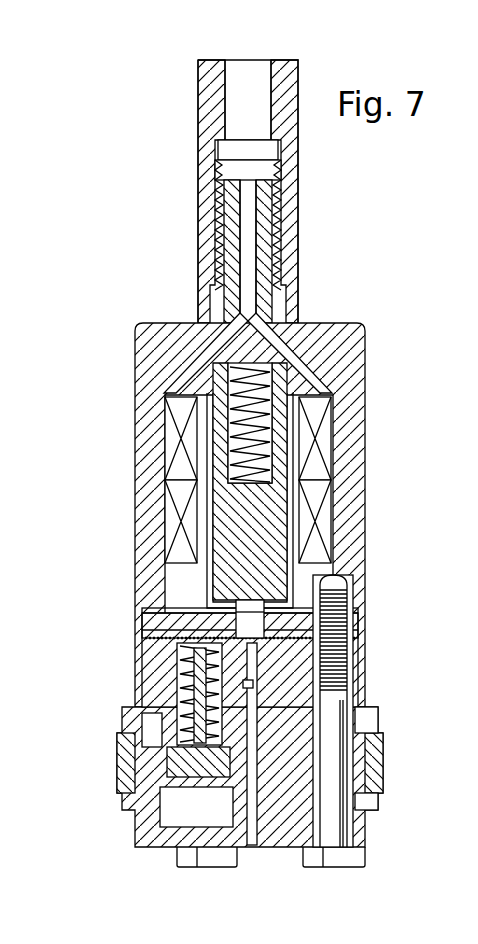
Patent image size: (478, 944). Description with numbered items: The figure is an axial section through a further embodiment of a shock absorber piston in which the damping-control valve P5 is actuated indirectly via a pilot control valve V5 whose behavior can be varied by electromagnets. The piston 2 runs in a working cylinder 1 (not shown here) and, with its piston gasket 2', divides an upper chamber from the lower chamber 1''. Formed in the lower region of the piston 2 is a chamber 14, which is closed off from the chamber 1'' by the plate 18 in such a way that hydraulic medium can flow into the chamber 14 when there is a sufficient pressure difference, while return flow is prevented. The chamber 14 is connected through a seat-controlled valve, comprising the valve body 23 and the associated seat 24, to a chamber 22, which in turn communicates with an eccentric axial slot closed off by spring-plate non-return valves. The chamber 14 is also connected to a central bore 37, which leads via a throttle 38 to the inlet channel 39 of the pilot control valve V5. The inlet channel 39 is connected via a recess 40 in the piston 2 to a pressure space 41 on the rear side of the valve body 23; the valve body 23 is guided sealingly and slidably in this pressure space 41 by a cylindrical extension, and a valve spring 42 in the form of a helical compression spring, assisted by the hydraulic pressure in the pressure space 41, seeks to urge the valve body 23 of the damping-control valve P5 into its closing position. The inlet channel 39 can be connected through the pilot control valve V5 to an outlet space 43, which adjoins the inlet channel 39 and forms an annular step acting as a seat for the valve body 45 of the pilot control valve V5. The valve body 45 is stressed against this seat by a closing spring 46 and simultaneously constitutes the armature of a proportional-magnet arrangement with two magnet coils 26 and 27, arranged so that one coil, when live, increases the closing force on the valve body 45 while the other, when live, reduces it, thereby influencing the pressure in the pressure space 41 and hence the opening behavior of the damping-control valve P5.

The working cylinder 1 is at (217, 191).
The chamber 1'' is at (250, 746).
The piston 2 is at (290, 510).
The piston gasket 2' is at (398, 763).
The chamber 14 is at (180, 815).
The plate 18 is at (160, 848).
The chamber 22 is at (140, 722).
The valve body 23 is at (120, 760).
The seat 24 is at (130, 800).
The magnet coil 26 is at (165, 511).
The magnet coil 27 is at (170, 433).
The central bore 37 is at (370, 720).
The throttle 38 is at (348, 680).
The inlet channel 39 is at (348, 652).
The recess 40 is at (183, 612).
The pressure space 41 is at (180, 660).
The valve spring 42 is at (175, 678).
The outlet space 43 is at (355, 612).
The valve body 45 is at (253, 509).
The closing spring 46 is at (330, 432).
The pilot control valve V5 is at (243, 623).
The damping-control valve P5 is at (362, 812).